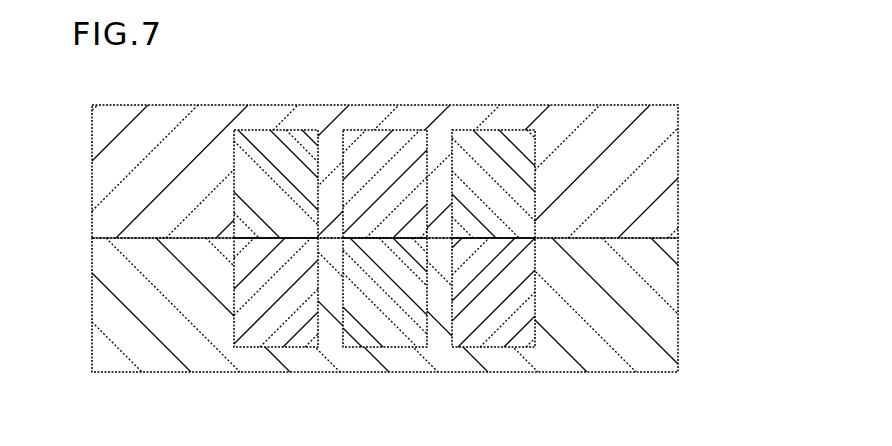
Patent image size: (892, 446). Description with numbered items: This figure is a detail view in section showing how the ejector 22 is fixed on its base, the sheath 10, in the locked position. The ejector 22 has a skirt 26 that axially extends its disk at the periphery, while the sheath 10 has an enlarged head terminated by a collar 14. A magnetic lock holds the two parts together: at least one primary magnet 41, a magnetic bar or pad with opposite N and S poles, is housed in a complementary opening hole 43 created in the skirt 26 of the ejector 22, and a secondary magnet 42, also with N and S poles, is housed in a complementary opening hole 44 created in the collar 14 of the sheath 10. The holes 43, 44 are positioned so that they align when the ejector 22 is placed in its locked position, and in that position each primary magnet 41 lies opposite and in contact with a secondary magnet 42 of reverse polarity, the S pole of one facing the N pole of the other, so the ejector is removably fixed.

The primary magnet 41 is at (391, 150).
The secondary magnet 42 is at (391, 327).
The opening hole 43 is at (232, 185).
The opening hole 44 is at (233, 290).
The ejector 22 is at (672, 160).
The skirt 26 is at (430, 171).
The sheath 10 is at (670, 290).
The collar 14 is at (430, 305).